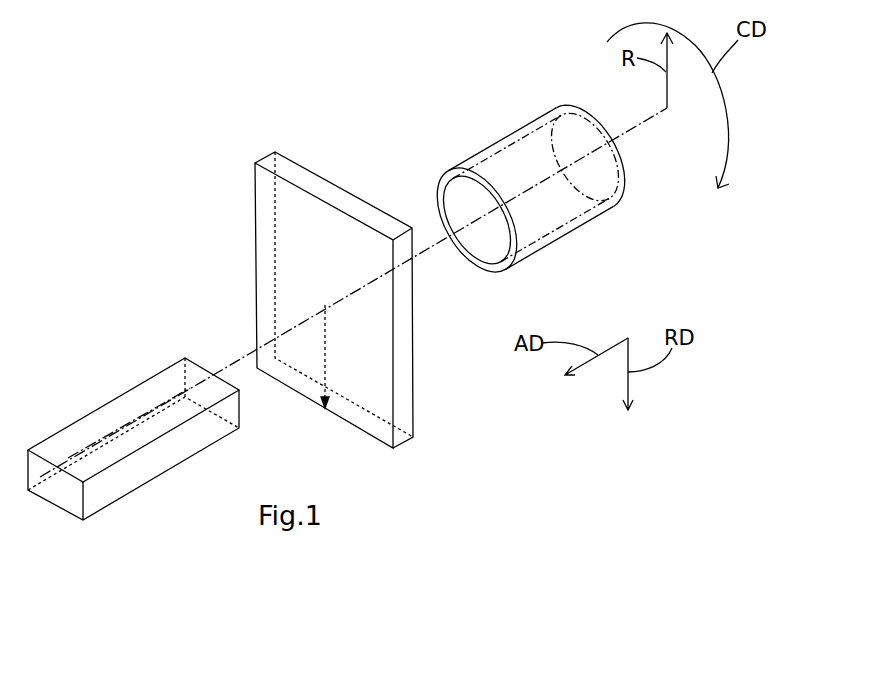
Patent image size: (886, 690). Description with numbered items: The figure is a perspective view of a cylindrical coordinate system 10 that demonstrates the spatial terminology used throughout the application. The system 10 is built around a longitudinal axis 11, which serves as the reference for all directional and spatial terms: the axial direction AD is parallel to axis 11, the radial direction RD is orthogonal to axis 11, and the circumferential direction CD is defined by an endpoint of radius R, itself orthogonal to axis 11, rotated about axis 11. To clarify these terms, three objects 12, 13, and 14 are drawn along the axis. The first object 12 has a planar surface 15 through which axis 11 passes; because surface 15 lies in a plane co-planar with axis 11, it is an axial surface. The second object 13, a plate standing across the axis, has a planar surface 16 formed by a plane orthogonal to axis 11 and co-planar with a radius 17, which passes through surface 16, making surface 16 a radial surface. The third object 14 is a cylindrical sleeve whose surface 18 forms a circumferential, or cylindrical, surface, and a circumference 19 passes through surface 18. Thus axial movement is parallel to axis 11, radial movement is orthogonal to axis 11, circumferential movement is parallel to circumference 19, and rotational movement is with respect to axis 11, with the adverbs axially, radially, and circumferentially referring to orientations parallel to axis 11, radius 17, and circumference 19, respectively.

The cylindrical coordinate system 10 is at (213, 193).
The longitudinal axis 11 is at (622, 133).
The object 12 is at (133, 464).
The object 13 is at (335, 320).
The object 14 is at (500, 192).
The axial surface 15 is at (100, 425).
The radial surface 16 is at (268, 265).
The radius 17 is at (327, 350).
The circumferential surface 18 is at (500, 127).
The circumference 19 is at (436, 188).